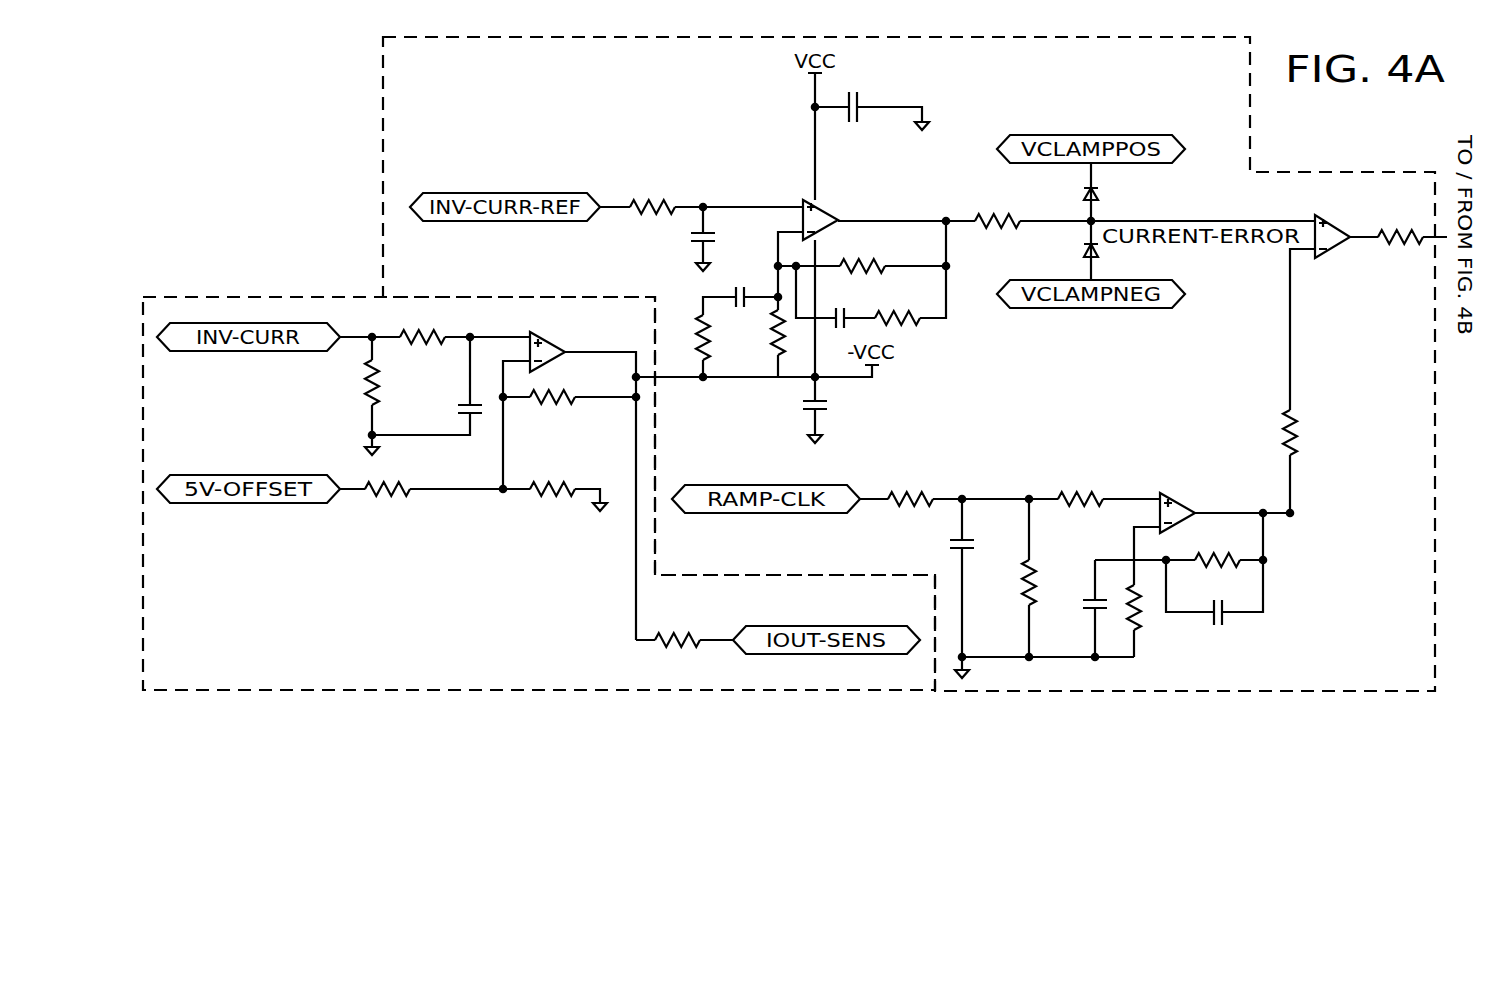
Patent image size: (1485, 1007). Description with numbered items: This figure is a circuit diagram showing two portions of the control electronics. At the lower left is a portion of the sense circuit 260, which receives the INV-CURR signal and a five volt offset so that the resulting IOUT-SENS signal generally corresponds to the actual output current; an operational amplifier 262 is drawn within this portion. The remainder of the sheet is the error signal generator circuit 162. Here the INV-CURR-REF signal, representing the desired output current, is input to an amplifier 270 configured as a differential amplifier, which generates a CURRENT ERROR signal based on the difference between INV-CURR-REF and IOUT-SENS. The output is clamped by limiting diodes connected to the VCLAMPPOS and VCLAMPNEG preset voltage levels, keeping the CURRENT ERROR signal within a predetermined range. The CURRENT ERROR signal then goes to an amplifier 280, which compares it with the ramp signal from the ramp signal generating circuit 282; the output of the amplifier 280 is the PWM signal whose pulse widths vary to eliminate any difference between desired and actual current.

The error signal generator circuit 162 is at (417, 125).
The portion of the sense circuit 260 is at (335, 675).
The differential amplifier 262 is at (553, 345).
The amplifier 270 is at (829, 208).
The amplifier 280 is at (1340, 233).
The ramp signal generating circuit 282 is at (1287, 597).